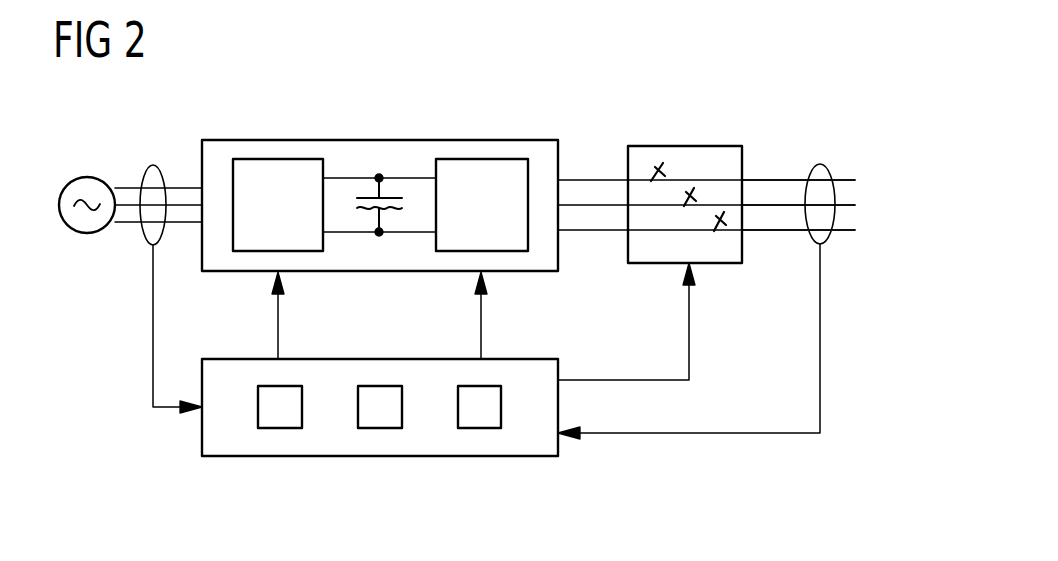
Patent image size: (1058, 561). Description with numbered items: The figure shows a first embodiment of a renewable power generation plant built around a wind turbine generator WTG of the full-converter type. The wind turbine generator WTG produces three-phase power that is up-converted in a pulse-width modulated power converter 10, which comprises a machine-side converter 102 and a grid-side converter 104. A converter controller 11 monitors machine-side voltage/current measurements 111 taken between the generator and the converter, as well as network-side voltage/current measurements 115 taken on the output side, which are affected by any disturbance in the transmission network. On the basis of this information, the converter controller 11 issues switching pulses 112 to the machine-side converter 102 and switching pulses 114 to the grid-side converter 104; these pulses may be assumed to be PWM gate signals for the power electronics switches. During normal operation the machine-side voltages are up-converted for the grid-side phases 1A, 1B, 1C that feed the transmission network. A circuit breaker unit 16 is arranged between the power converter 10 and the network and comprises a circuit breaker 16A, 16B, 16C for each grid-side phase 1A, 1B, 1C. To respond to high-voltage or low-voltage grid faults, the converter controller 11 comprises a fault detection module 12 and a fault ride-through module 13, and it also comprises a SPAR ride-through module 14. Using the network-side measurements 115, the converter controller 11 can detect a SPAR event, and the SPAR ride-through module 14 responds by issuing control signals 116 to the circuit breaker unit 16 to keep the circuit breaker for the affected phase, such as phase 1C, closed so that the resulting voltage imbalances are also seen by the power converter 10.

The wind turbine generator WTG is at (90, 177).
The power converter 10 is at (378, 140).
The machine-side converter 102 is at (278, 159).
The grid-side converter 104 is at (478, 159).
The converter controller 11 is at (560, 407).
The fault detection module 12 is at (282, 428).
The fault ride-through module 13 is at (380, 428).
The SPAR ride-through module 14 is at (480, 428).
The circuit breaker unit 16 is at (722, 146).
The circuit breaker 16A is at (651, 180).
The circuit breaker 16B is at (687, 194).
The circuit breaker 16C is at (712, 227).
The grid-side phase 1A is at (756, 180).
The grid-side phase 1B is at (782, 205).
The grid-side phase 1C is at (797, 232).
The machine-side voltage/current measurements 111 is at (150, 283).
The switching pulses 112 is at (280, 313).
The switching pulses 114 is at (483, 300).
The network-side voltage/current measurements 115 is at (823, 328).
The control signals 116 is at (691, 332).